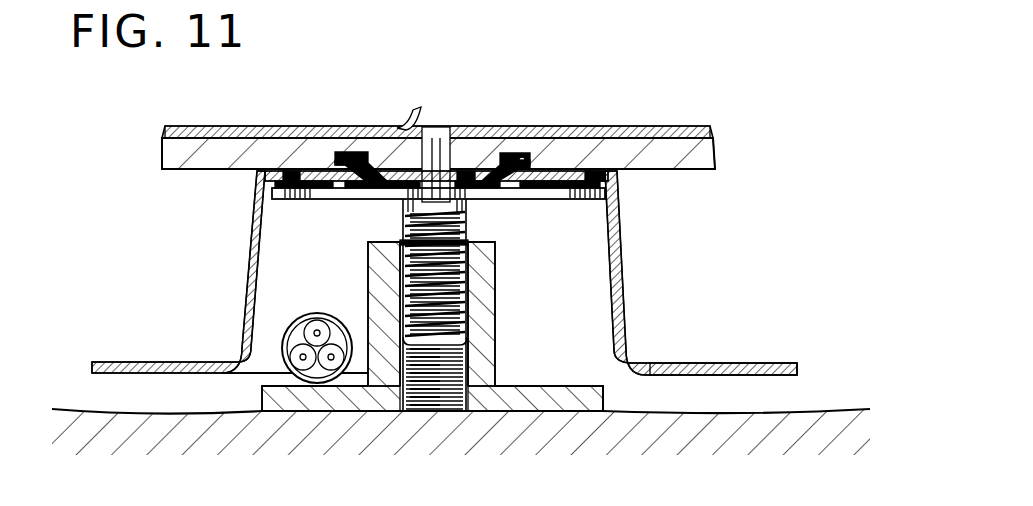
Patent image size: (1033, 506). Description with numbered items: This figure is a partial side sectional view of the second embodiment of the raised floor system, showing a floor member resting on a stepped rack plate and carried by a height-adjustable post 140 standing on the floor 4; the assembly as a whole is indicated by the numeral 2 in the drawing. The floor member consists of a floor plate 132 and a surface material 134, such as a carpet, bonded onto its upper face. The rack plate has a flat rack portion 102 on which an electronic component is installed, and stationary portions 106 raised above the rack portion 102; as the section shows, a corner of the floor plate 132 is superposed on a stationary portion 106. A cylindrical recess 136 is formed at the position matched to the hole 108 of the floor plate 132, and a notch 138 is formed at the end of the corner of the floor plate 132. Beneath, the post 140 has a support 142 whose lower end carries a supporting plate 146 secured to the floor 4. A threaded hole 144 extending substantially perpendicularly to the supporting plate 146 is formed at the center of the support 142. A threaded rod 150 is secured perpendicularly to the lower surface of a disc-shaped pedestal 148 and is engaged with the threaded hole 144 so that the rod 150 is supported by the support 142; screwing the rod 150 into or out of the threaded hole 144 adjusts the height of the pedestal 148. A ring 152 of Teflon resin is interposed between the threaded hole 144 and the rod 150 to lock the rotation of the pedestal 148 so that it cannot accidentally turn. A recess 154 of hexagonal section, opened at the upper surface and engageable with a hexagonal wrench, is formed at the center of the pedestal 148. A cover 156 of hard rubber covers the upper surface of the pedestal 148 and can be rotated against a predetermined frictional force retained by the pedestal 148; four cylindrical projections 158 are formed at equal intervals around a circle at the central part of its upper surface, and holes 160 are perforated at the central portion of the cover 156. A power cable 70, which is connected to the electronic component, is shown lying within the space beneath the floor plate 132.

The electronic apparatus enclosure 2 is at (146, 192).
The floor 4 is at (840, 412).
The power cable 70 is at (296, 331).
The rack portion 102 is at (746, 364).
The stationary portion 106 is at (617, 173).
The hole 108 is at (343, 181).
The floor plate 132 is at (716, 149).
The surface material 134 is at (693, 127).
The cylindrical recess 136 is at (350, 153).
The notch 138 is at (455, 137).
The post 140 is at (240, 264).
The support 142 is at (495, 325).
The threaded hole 144 is at (495, 366).
The supporting plate 146 is at (605, 410).
The pedestal 148 is at (497, 248).
The threaded rod 150 is at (402, 196).
The ring 152 is at (400, 245).
The recess 154 is at (470, 200).
The cover 156 is at (590, 173).
The cylindrical projection 158 is at (348, 152).
The hole 160 is at (425, 140).